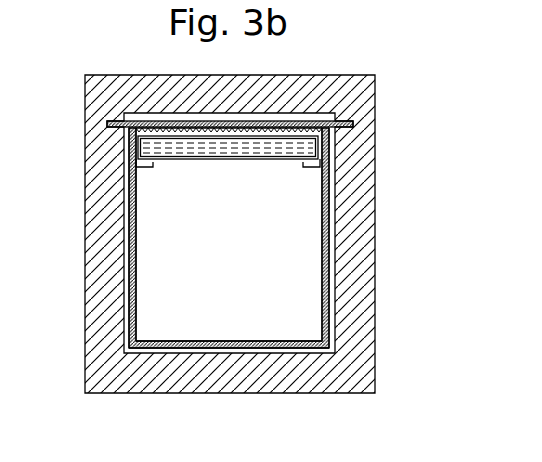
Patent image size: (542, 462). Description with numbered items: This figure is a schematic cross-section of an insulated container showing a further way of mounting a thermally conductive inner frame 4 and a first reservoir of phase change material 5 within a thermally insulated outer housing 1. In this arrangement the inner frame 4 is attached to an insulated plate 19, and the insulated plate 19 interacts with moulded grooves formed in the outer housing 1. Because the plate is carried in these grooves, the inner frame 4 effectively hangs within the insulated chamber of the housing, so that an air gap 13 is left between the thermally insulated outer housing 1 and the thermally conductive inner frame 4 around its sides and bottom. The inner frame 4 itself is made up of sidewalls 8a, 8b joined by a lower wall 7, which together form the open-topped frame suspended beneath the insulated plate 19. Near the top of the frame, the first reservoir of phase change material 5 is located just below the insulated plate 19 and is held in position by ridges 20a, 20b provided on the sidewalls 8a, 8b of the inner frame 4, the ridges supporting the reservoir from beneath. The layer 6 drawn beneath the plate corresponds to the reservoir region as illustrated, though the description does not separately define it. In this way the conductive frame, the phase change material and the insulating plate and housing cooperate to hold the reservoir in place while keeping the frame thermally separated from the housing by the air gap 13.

The thermally insulated outer housing 1 is at (355, 332).
The thermally conductive inner frame 4 is at (332, 238).
The first reservoir of phase change material 5 is at (192, 162).
The functional layer 6 is at (140, 148).
The lower wall 7 is at (158, 343).
The sidewall 8a is at (133, 292).
The sidewall 8b is at (326, 283).
The air gap 13 is at (143, 117).
The insulated plate 19 is at (315, 128).
The ridge 20a is at (138, 168).
The ridge 20b is at (320, 163).